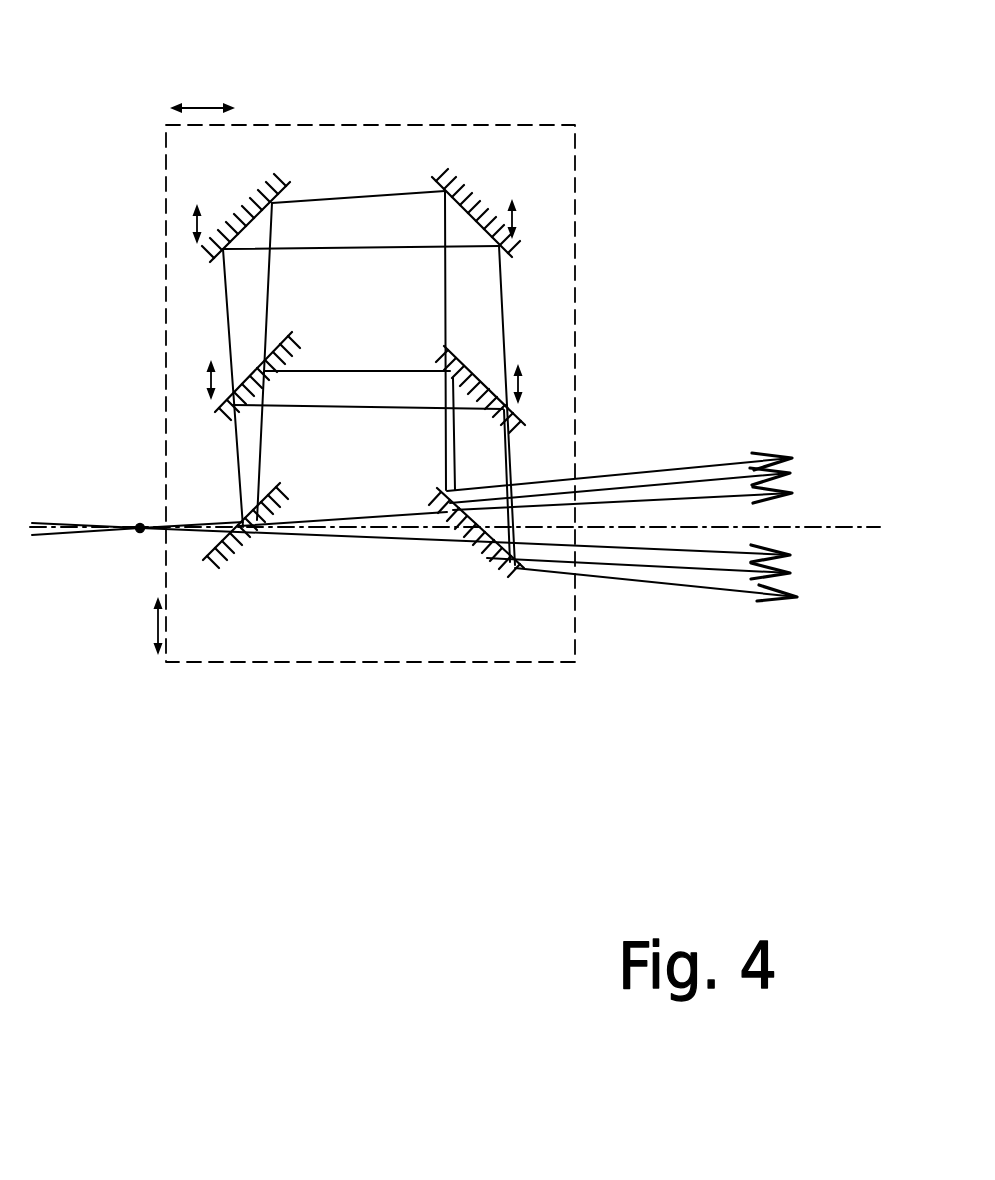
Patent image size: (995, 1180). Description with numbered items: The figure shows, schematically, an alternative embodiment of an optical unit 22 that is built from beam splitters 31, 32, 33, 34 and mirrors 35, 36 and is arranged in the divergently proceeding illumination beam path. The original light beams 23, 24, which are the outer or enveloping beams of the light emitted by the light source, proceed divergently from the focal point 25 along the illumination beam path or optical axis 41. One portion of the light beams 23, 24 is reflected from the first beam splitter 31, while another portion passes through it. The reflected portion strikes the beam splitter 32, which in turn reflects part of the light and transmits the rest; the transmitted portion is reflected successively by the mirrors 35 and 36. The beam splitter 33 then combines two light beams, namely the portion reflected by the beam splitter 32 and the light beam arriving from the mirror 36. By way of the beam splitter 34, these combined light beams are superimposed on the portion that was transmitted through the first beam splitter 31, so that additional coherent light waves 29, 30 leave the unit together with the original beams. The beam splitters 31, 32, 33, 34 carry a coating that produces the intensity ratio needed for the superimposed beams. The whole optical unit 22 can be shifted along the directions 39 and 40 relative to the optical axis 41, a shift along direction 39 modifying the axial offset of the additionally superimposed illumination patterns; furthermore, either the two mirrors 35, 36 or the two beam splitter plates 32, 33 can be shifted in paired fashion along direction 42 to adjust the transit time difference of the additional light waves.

The optical unit 22 is at (368, 125).
The light beam 23 is at (733, 552).
The light beam 24 is at (720, 495).
The focal point 25 is at (140, 532).
The additional light wave 29 is at (665, 480).
The additional light wave 30 is at (597, 478).
The first beam splitter 31 is at (235, 556).
The beam splitter 32 is at (225, 413).
The beam splitter 33 is at (520, 427).
The beam splitter 34 is at (487, 550).
The mirror 35 is at (243, 217).
The mirror 36 is at (468, 199).
The direction 39 is at (203, 108).
The direction 40 is at (158, 627).
The optical axis 41 is at (410, 540).
The direction 42 is at (197, 222).